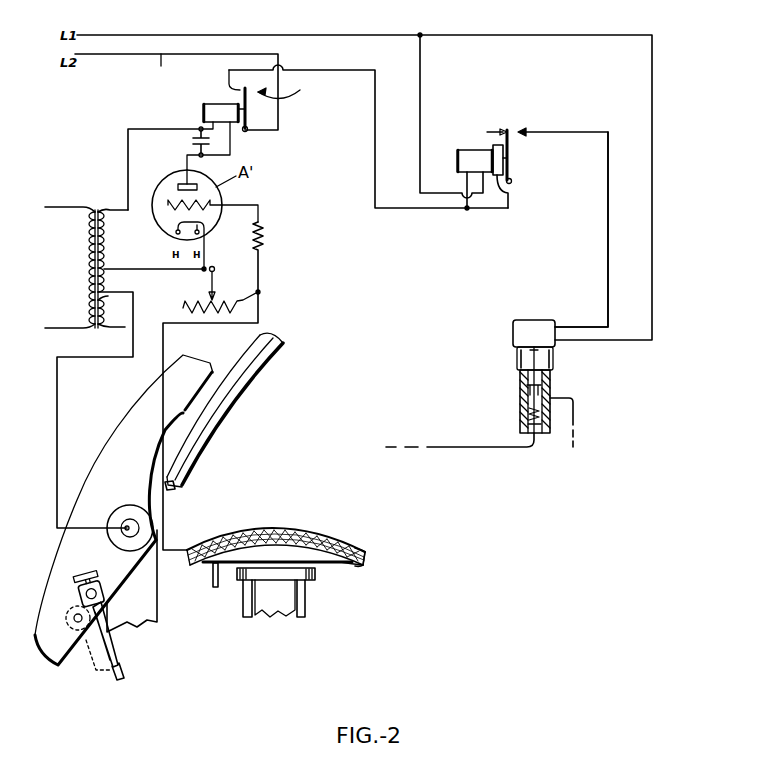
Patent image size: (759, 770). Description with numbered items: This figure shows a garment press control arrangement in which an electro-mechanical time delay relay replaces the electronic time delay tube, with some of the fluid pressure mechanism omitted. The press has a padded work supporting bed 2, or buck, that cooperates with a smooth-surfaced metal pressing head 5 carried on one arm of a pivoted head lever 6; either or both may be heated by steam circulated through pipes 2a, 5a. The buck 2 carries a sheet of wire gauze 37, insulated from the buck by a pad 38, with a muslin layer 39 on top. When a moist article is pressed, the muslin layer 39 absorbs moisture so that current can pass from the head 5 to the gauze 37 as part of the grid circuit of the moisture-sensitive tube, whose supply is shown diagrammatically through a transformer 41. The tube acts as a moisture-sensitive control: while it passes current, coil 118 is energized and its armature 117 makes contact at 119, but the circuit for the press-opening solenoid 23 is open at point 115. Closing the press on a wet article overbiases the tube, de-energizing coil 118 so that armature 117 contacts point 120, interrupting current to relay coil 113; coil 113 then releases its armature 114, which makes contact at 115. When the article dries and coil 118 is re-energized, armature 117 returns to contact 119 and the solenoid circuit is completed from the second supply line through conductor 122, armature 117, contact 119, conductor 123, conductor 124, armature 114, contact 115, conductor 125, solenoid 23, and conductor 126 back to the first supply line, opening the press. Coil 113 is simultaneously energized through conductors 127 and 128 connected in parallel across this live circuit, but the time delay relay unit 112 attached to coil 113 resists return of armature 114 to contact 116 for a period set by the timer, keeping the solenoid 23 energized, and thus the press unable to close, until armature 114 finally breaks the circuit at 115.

The padded work supporting bed 2 is at (323, 560).
The pipe 2a is at (219, 586).
The pressing head 5 is at (265, 345).
The pipe 5a is at (176, 488).
The head lever 6 is at (107, 433).
The solenoid 23 is at (513, 333).
The wire gauze 37 is at (370, 552).
The pad 38 is at (371, 563).
The muslin layer 39 is at (305, 527).
The transformer 41 is at (94, 208).
The electro-mechanical time delay relay unit 112 is at (510, 195).
The electro-magnetic relay coil 113 is at (470, 150).
The armature 114 is at (508, 148).
The contact 115 is at (524, 129).
The contact 116 is at (507, 130).
The armature 117 is at (248, 109).
The coil 118 is at (202, 109).
The contact 119 is at (228, 84).
The contact point 120 is at (295, 88).
The conductor 122 is at (176, 92).
The conductor 123 is at (375, 70).
The conductor 124 is at (498, 210).
The conductor 125 is at (607, 242).
The conductor 126 is at (653, 235).
The conductor 127 is at (420, 58).
The conductor 128 is at (465, 209).